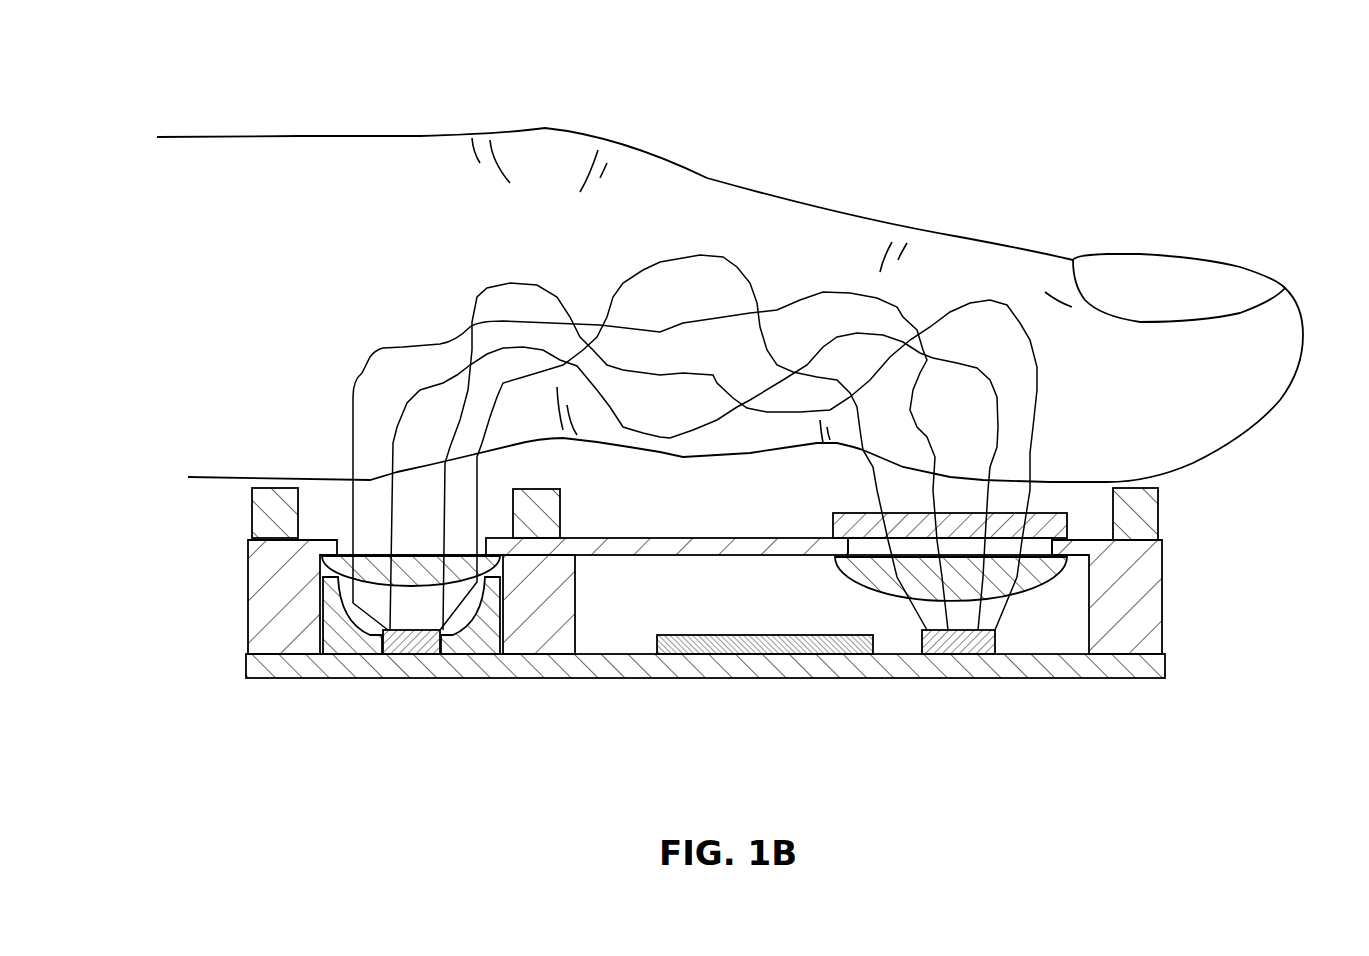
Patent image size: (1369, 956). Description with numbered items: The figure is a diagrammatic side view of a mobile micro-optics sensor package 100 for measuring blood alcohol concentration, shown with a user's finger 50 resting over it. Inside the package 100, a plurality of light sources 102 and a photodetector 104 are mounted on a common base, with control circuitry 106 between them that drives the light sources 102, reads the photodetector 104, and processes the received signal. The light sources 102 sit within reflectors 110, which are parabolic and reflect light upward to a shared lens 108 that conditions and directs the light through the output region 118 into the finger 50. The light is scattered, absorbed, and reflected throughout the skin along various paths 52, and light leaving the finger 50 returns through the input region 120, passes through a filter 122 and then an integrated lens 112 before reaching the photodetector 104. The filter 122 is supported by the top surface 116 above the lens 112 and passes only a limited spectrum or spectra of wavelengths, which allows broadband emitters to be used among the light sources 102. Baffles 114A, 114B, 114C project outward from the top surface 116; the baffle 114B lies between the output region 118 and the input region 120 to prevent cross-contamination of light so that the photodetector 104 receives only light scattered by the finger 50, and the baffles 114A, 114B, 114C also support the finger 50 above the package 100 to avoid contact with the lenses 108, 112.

The finger 50 is at (310, 165).
The paths 52 is at (698, 255).
The mobile micro-optics sensor package 100 is at (180, 668).
The light sources 102 is at (413, 645).
The photodetector 104 is at (973, 645).
The control circuitry 106 is at (765, 647).
The lens 108 is at (422, 557).
The reflectors 110 is at (347, 645).
The lens 112 is at (1047, 560).
The baffle 114A is at (260, 517).
The baffle 114B is at (562, 515).
The baffle 114C is at (1152, 513).
The top surface 116 is at (607, 538).
The output region 118 is at (337, 522).
The input region 120 is at (818, 517).
The filter 122 is at (1047, 560).